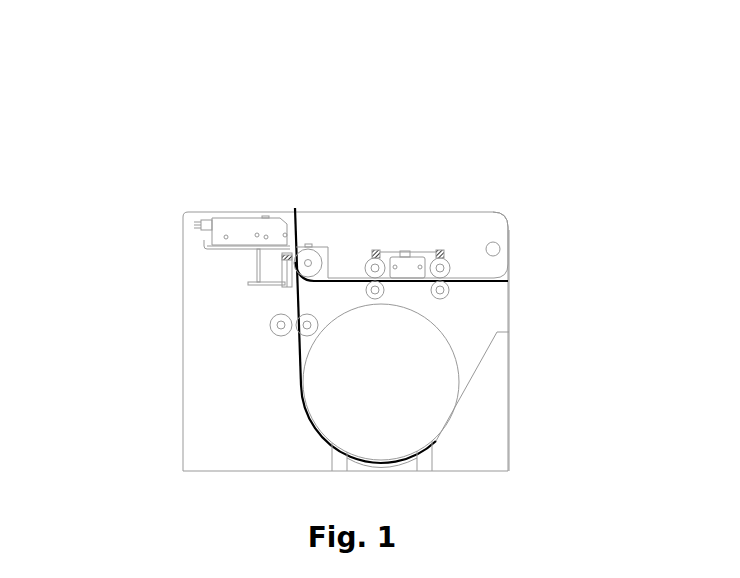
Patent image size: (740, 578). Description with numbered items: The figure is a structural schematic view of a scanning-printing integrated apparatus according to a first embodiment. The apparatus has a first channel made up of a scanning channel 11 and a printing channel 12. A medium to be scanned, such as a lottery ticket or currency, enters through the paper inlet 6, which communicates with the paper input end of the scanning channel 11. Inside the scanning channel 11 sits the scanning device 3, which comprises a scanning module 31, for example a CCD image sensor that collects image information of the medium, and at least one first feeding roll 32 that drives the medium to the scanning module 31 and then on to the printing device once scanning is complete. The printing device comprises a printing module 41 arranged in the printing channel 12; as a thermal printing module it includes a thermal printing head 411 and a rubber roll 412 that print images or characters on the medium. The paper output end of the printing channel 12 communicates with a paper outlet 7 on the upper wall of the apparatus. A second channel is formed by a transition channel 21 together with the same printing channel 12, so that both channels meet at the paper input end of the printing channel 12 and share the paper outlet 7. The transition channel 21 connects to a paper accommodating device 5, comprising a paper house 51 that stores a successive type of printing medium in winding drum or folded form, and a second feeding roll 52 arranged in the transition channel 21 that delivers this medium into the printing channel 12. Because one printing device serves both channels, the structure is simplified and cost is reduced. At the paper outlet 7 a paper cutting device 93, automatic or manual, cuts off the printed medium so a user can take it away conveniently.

The scanning channel 11 is at (458, 278).
The printing channel 12 is at (295, 261).
The transition channel 21 is at (300, 352).
The scanning device 3 is at (425, 162).
The scanning module 31 is at (413, 266).
The first feeding roll 32 is at (376, 252).
The printing module 41 is at (346, 156).
The thermal printing head 411 is at (289, 250).
The rubber roll 412 is at (321, 258).
The paper accommodating device 5 is at (232, 387).
The paper house 51 is at (335, 360).
The second feeding roll 52 is at (270, 328).
The paper inlet 6 is at (508, 273).
The paper outlet 7 is at (294, 213).
The paper cutting device 93 is at (253, 225).